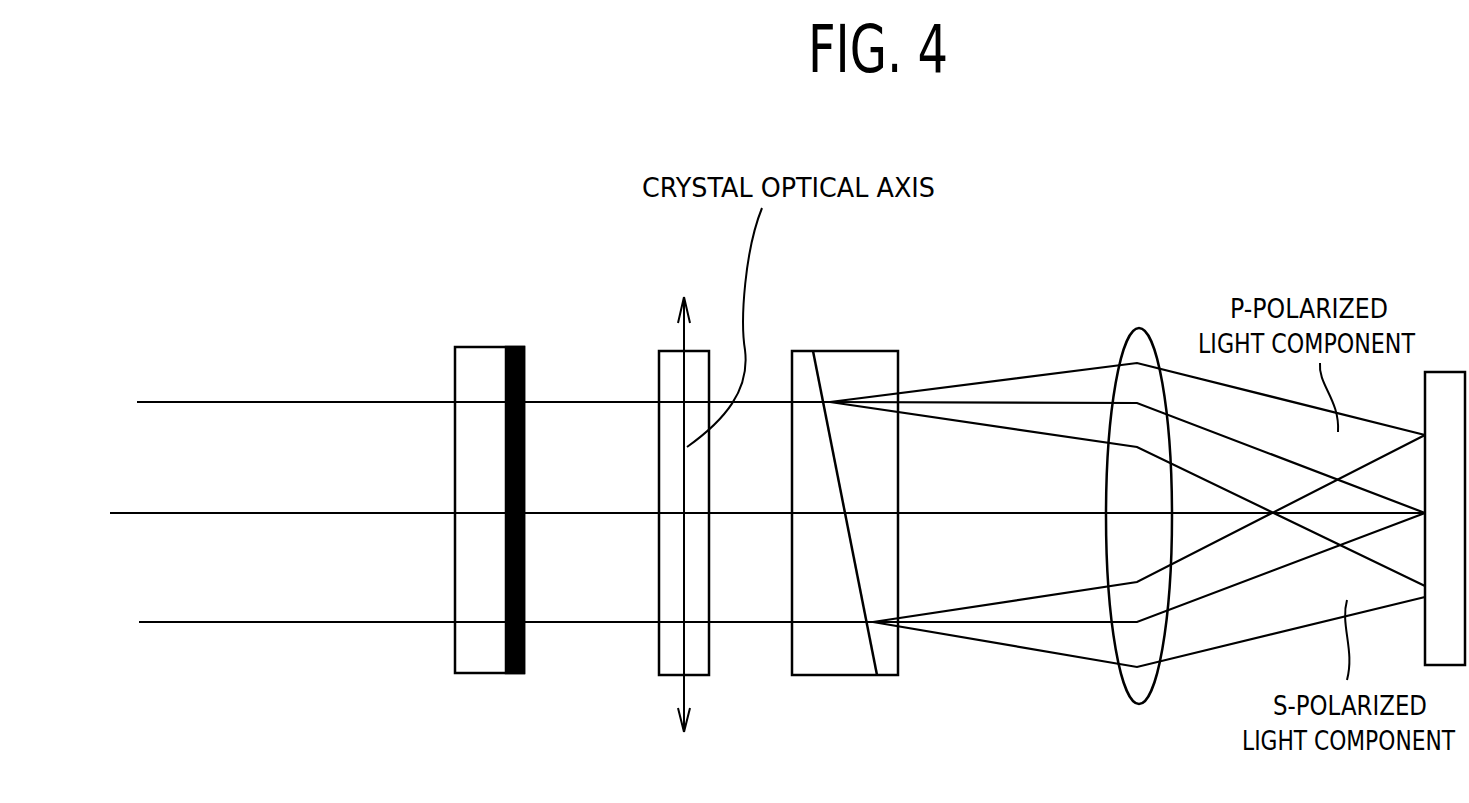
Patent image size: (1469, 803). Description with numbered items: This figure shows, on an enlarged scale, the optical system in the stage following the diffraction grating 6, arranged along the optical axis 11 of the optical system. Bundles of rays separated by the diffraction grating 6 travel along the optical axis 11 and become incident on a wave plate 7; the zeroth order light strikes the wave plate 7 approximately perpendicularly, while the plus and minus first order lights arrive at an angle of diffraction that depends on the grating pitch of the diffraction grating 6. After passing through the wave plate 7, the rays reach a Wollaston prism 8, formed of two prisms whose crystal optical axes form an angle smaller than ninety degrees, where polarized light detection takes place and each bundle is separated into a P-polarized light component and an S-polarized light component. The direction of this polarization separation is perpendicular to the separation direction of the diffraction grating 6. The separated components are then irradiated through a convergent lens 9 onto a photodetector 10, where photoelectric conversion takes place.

The diffraction grating 6 is at (485, 369).
The wave plate 7 is at (670, 363).
The Wollaston prism 8 is at (858, 370).
The convergent lens 9 is at (1143, 357).
The photodetector 10 is at (1447, 392).
The optical axis 11 is at (254, 508).